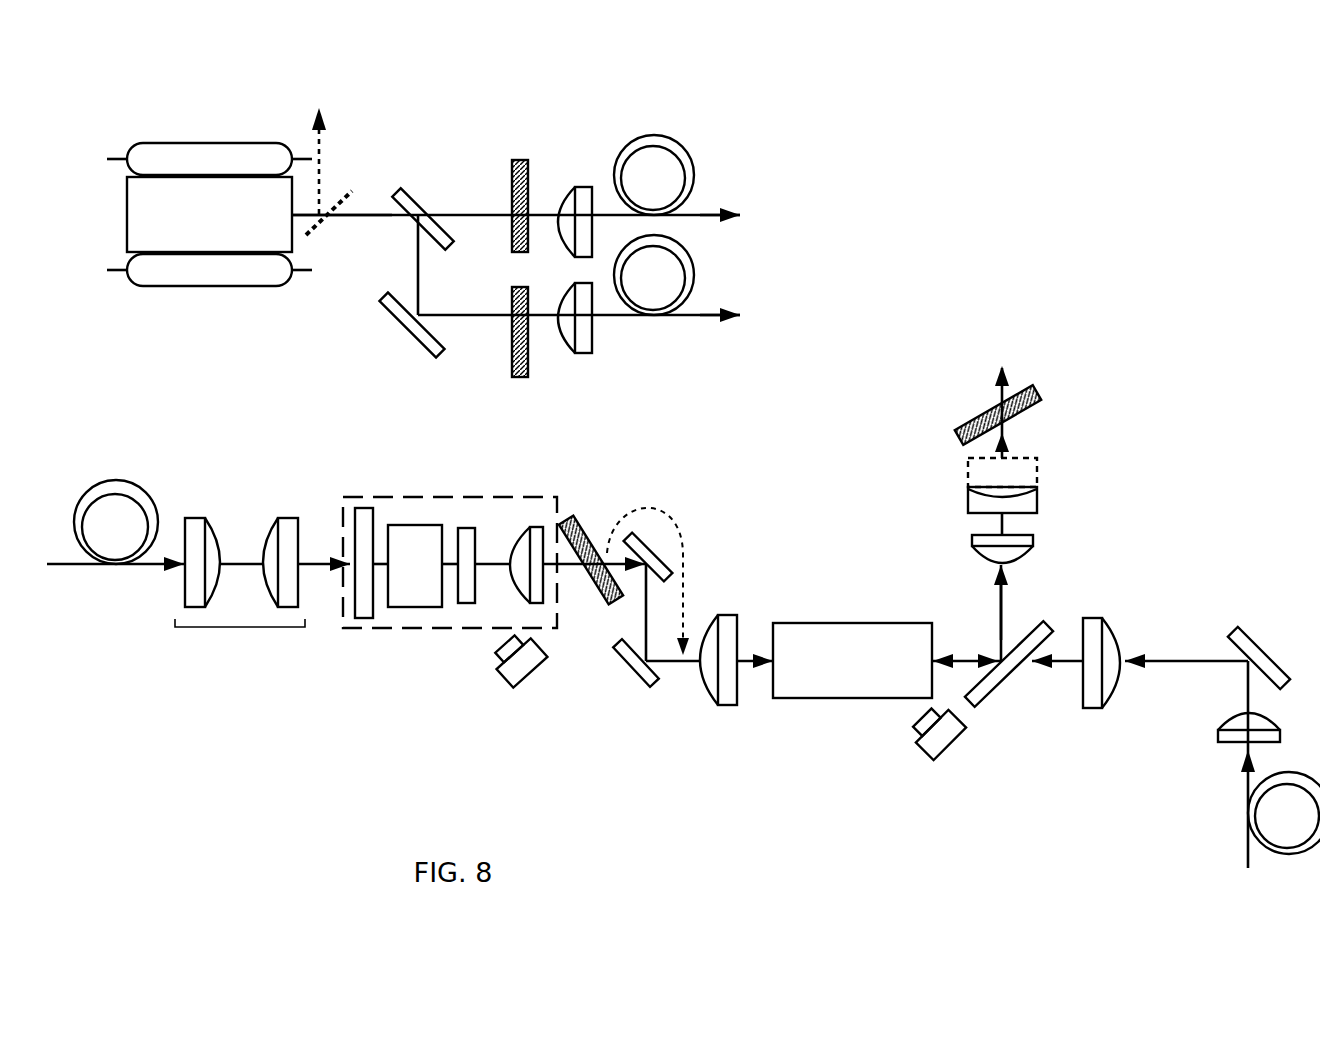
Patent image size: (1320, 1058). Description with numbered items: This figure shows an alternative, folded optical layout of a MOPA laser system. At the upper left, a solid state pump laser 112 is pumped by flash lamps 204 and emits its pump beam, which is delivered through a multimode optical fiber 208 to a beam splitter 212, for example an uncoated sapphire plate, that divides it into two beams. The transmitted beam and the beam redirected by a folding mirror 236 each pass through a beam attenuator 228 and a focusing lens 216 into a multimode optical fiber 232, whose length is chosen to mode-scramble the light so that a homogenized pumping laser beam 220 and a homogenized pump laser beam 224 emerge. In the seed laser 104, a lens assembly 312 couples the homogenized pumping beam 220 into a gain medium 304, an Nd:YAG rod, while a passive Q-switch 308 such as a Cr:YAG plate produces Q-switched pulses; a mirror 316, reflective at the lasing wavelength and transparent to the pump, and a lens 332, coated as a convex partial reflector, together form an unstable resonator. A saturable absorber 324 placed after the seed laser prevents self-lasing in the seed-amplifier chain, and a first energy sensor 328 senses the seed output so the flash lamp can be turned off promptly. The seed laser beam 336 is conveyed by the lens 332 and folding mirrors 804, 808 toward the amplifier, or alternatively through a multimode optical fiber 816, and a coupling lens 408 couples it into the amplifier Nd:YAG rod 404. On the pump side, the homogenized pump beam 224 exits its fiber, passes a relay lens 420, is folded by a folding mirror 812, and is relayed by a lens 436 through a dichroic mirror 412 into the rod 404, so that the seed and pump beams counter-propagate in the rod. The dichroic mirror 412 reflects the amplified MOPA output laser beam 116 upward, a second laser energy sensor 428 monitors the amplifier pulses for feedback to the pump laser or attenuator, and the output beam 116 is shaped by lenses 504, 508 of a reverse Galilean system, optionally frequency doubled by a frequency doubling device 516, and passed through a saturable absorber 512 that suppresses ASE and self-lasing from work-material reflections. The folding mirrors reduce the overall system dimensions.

The seed laser 104 is at (418, 630).
The pump laser 112 is at (209, 214).
The MOPA output laser beam 116 is at (1003, 607).
The flash lamp 204 is at (200, 143).
The multimode optical fiber 208 is at (383, 217).
The beam splitter 212 is at (430, 202).
The focusing lens 216 is at (583, 188).
The homogenized pumping laser beam 220 is at (708, 213).
The pump laser beam 224 is at (723, 327).
The beam attenuator 228 is at (512, 162).
The multimode optical fiber 232 is at (650, 140).
The folding mirror 236 is at (400, 323).
The gain medium 304 is at (418, 525).
The passive Q-switch 308 is at (463, 530).
The lens assembly 312 is at (217, 627).
The mirror 316 is at (353, 515).
The saturable absorber 324 is at (583, 523).
The first energy sensor 328 is at (540, 675).
The lens 332 is at (547, 583).
The laser beam 336 is at (610, 540).
The Nd:YAG rod 404 is at (852, 660).
The coupling lens 408 is at (702, 687).
The dichroic mirror 412 is at (1013, 670).
The relay lens 420 is at (1222, 743).
The second laser energy sensor 428 is at (960, 737).
The relay lens 436 is at (1083, 620).
The lens 504 is at (1035, 552).
The lens 508 is at (968, 502).
The saturable absorber 512 is at (972, 420).
The frequency doubling device 516 is at (1037, 465).
The folding mirror 804 is at (685, 535).
The folding mirror 808 is at (627, 665).
The folding mirror 812 is at (1265, 635).
The multimode optical fiber 816 is at (688, 600).